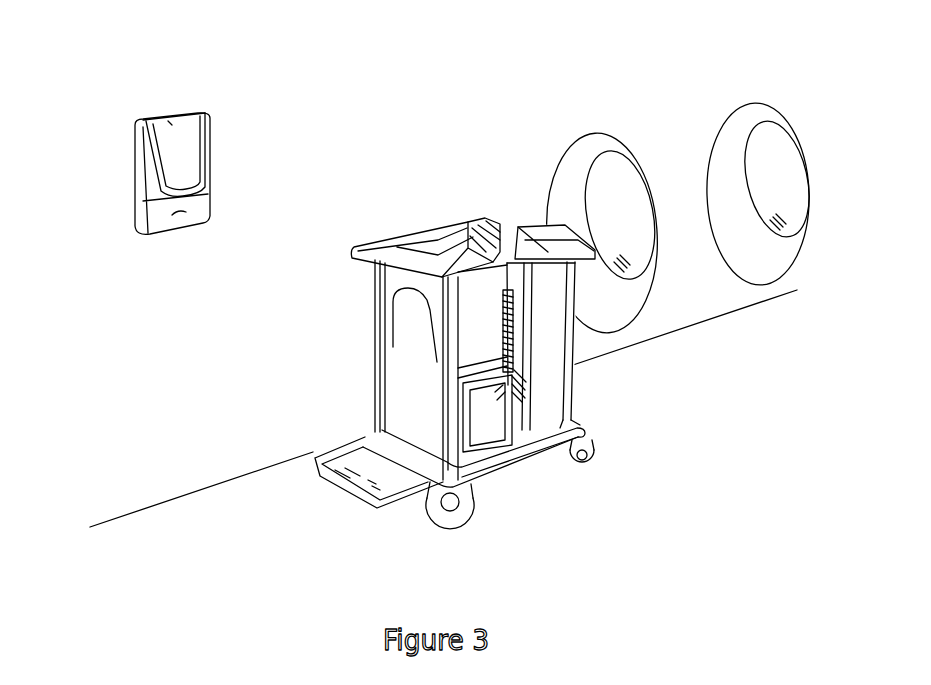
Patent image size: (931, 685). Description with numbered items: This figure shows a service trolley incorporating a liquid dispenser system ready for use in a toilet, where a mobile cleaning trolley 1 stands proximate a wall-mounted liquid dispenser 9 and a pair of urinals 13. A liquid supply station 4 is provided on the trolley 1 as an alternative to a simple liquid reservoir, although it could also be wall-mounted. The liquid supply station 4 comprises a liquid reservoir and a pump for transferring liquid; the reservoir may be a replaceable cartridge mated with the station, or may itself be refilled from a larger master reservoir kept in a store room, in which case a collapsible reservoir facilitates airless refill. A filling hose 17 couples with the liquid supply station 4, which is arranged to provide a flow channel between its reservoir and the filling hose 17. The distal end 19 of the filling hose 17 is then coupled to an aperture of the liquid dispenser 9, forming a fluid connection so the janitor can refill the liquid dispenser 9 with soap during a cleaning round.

The mobile cleaning trolley 1 is at (322, 382).
The liquid supply station 4 is at (490, 423).
The liquid dispenser 9 is at (210, 170).
The urinals 13 is at (710, 125).
The filling hose 17 is at (487, 308).
The distal end of the filling hose 19 is at (503, 212).